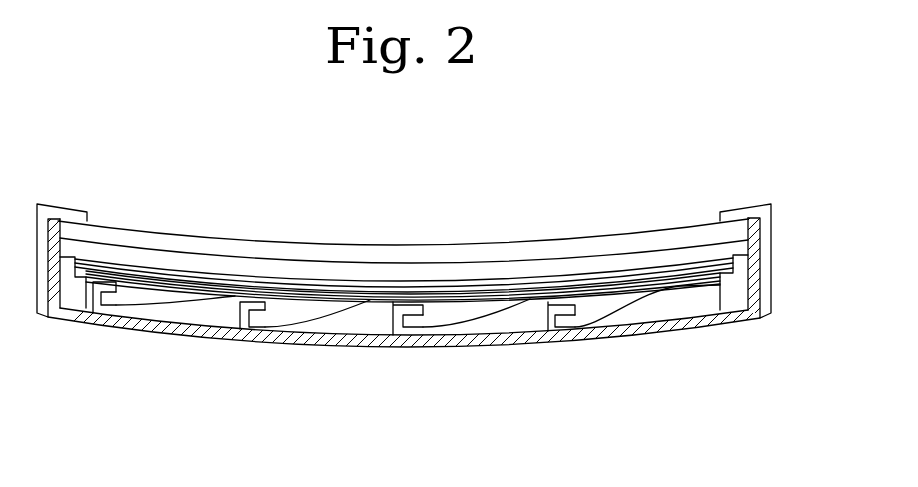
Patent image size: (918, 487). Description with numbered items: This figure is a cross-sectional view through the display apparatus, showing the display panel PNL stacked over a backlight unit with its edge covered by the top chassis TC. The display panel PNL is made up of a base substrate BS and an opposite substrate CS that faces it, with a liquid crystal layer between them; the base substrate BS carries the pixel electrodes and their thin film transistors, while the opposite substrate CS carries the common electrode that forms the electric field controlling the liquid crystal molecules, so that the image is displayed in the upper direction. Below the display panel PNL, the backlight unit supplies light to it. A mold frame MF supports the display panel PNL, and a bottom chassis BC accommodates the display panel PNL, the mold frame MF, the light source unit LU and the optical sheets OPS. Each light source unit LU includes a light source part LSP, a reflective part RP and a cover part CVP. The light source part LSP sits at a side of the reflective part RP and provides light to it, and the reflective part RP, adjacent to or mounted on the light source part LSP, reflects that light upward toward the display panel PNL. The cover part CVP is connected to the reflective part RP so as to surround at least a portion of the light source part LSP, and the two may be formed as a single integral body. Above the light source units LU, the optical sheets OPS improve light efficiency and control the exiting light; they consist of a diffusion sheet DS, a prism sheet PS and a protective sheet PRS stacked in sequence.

The top chassis TC is at (763, 220).
The bottom chassis BC is at (753, 250).
The mold frame MF is at (740, 280).
The display panel PNL is at (403, 216).
The base substrate BS is at (482, 253).
The opposite substrate CS is at (540, 266).
The optical sheets OPS is at (404, 227).
The prism sheet PS is at (243, 286).
The protective sheet PRS is at (293, 286).
The diffusion sheet DS is at (265, 193).
The light source unit LU is at (406, 372).
The cover part CVP is at (242, 304).
The light source part LSP is at (252, 318).
The reflective part RP is at (218, 417).